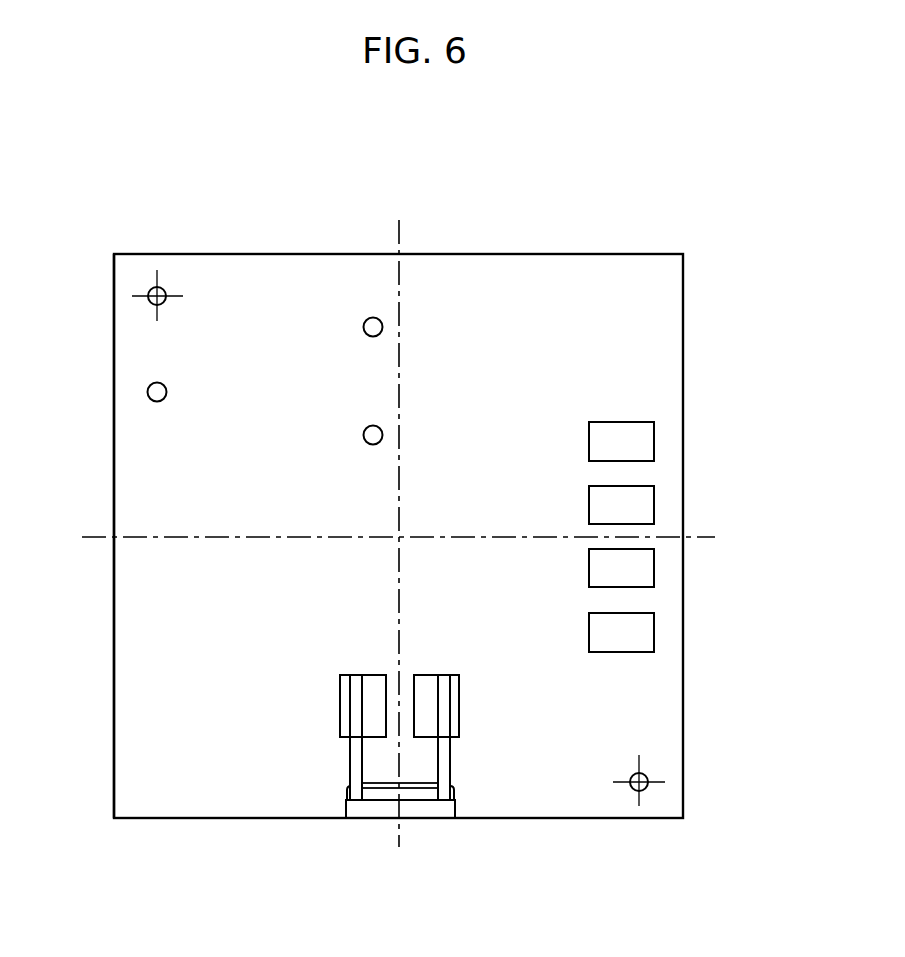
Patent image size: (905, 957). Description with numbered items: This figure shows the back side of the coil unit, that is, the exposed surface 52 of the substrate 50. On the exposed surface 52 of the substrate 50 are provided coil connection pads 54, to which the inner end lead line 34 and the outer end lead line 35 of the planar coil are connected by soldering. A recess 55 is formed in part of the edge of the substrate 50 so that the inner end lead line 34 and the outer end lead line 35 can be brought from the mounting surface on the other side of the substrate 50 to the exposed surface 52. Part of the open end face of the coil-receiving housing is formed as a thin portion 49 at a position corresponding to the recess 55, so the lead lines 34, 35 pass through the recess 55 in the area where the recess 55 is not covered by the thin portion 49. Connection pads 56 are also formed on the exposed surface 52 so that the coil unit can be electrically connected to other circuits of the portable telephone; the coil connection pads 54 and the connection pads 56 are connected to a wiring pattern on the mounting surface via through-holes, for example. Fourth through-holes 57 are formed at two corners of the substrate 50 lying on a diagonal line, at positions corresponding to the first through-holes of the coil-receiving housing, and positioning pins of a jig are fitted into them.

The substrate 50 is at (690, 302).
The exposed surface 52 is at (137, 758).
The fourth through-holes 57 is at (148, 299).
The connection pads 56 is at (642, 443).
The coil connection pads 54 is at (342, 706).
The outer end lead line 35 is at (350, 766).
The inner end lead line 34 is at (450, 766).
The recess 55 is at (375, 796).
The thin portion 49 is at (428, 812).